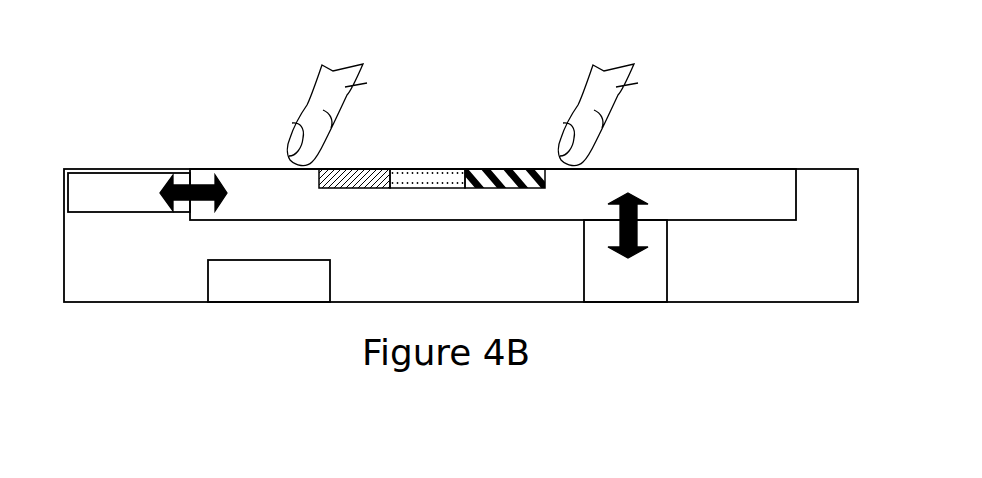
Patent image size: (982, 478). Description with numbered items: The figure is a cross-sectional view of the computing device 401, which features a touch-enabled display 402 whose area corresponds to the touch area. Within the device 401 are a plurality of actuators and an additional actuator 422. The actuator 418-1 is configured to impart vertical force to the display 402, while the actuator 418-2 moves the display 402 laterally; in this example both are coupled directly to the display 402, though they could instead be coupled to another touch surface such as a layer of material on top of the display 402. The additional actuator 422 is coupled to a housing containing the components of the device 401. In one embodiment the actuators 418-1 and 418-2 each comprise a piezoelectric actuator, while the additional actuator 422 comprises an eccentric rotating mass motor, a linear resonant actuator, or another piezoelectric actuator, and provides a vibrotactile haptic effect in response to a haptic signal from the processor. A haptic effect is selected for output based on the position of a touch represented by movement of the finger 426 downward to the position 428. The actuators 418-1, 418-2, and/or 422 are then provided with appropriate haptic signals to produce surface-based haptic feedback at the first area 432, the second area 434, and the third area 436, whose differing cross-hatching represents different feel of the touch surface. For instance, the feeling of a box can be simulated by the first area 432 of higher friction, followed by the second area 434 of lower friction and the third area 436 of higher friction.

The computing device 401 is at (854, 196).
The touch-enabled display 402 is at (791, 196).
The actuator 418-1 is at (664, 293).
The actuator 418-2 is at (128, 196).
The additional actuator 422 is at (249, 288).
The finger 426 is at (350, 88).
The position 428 is at (633, 80).
The first area 432 is at (352, 190).
The second area 434 is at (433, 168).
The third area 436 is at (490, 190).